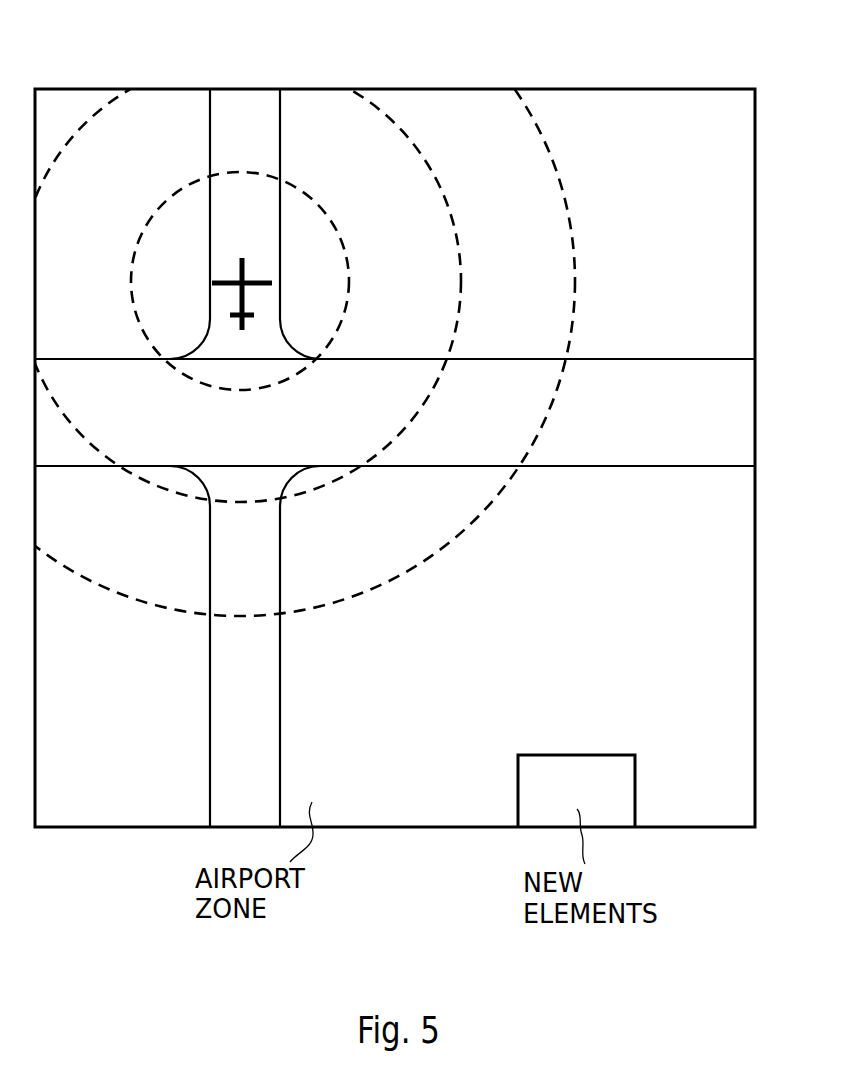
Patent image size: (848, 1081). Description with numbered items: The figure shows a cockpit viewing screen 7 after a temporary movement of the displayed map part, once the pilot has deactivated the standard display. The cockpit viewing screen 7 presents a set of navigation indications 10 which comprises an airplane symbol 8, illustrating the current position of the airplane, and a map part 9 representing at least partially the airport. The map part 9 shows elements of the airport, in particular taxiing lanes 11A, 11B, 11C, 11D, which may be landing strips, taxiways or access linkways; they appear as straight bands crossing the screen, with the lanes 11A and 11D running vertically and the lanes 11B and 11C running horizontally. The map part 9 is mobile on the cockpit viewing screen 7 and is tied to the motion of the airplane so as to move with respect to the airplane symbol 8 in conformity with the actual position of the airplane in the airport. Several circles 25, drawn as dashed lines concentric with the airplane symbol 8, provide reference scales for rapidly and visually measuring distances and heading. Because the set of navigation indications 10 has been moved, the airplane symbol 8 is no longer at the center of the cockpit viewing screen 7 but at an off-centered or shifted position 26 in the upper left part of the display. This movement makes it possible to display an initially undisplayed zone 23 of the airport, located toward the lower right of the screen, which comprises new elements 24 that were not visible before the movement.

The cockpit viewing screen 7 is at (655, 829).
The airplane symbol 8 is at (244, 270).
The map part 9 is at (350, 177).
The set of navigation indications 10 is at (555, 142).
The taxiing lane 11A is at (281, 693).
The taxiing lane 11B is at (72, 466).
The taxiing lane 11C is at (606, 466).
The taxiing lane 11D is at (283, 127).
The initially undisplayed zone 23 is at (420, 793).
The new elements 24 is at (636, 783).
The circles 25 is at (350, 241).
The off-centered position 26 is at (198, 283).